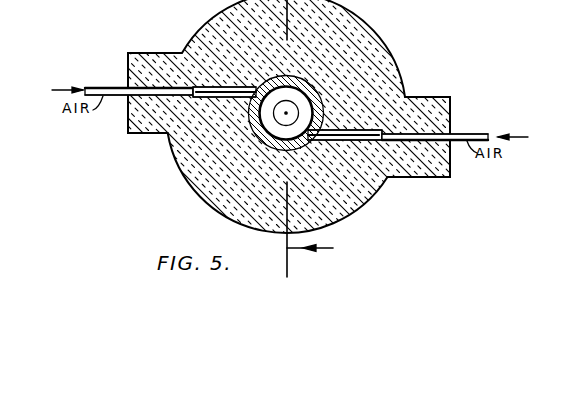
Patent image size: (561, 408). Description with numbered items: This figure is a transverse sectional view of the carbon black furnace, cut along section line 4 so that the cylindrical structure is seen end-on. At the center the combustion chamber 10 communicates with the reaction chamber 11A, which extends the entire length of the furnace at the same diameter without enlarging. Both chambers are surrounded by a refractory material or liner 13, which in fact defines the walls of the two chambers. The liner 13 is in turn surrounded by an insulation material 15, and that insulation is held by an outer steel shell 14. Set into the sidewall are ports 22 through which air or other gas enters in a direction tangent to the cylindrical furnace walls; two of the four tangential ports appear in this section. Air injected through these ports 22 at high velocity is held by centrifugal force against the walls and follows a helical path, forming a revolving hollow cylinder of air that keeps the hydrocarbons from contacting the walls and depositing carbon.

The combustion chamber 10 is at (312, 108).
The reaction chamber 11A is at (305, 93).
The refractory liner 13 is at (289, 111).
The steel shell 14 is at (388, 50).
The insulation material 15 is at (387, 82).
The tangential ports 22 is at (230, 97).
The section line 4- 4 is at (317, 249).